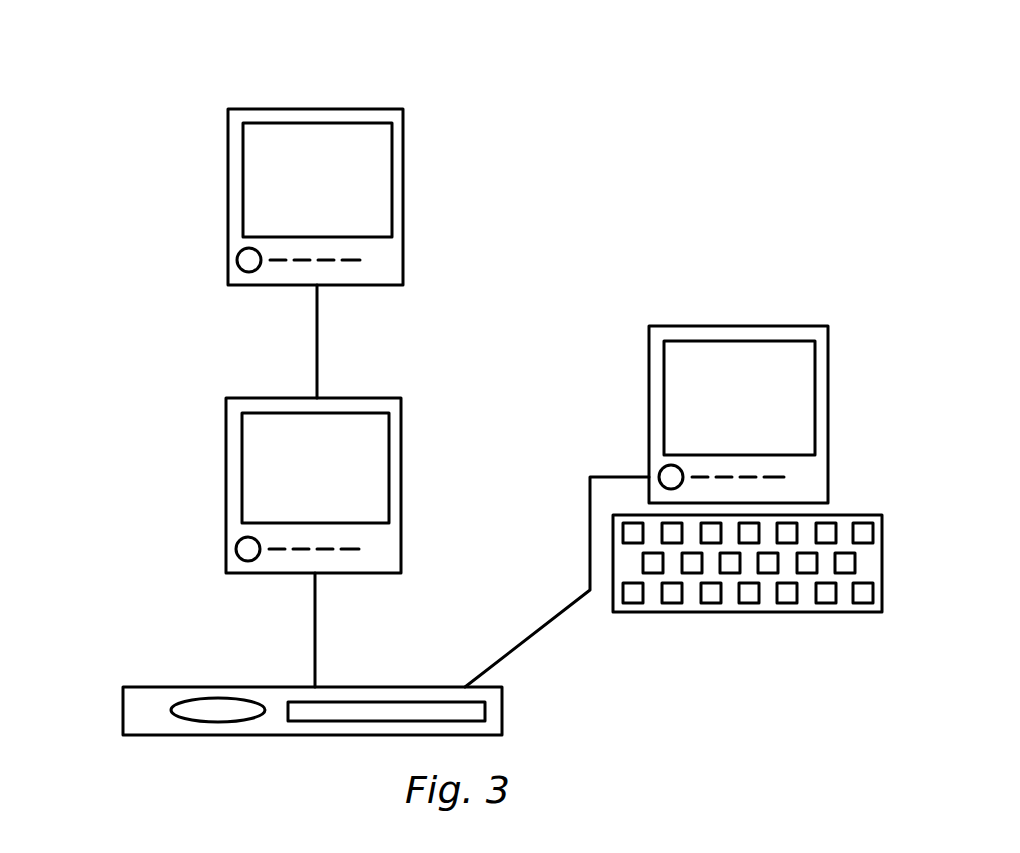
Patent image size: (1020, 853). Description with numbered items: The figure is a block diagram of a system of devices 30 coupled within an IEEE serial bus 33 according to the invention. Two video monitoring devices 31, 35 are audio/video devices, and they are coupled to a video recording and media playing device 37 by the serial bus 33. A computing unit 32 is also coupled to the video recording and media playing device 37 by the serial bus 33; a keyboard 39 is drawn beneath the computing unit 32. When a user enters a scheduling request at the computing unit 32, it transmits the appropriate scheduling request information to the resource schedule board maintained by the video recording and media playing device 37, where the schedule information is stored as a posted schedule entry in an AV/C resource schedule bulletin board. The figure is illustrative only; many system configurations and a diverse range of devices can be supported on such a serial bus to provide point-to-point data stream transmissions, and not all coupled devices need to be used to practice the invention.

The system of devices 30 is at (148, 92).
The video monitoring device 31 is at (403, 171).
The computing unit 32 is at (828, 388).
The IEEE 1394-1995 serial bus 33 is at (317, 346).
The video monitoring device 35 is at (401, 461).
The video recording and media playing device 37 is at (502, 705).
The keyboard 39 is at (732, 612).